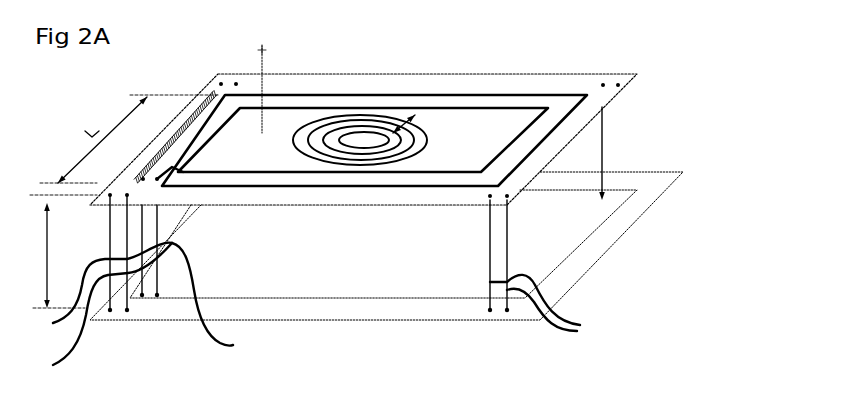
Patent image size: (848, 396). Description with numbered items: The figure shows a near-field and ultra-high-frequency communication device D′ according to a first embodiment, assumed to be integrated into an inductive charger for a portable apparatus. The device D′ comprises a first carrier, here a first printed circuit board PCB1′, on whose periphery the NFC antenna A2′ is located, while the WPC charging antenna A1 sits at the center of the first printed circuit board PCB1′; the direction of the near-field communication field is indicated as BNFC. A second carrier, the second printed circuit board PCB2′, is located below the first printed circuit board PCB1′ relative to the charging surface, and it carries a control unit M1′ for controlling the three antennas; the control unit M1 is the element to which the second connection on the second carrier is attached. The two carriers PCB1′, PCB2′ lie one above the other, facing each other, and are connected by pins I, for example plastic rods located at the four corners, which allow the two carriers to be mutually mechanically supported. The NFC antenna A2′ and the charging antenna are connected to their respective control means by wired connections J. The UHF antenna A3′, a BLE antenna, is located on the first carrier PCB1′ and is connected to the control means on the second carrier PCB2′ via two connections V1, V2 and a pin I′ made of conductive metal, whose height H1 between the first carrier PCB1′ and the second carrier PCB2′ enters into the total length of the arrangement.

The first printed circuit board PCB1′ is at (616, 73).
The second printed circuit board PCB2′ is at (667, 195).
The WPC charging antenna A1 is at (365, 117).
The NFC antenna A2′ is at (463, 98).
The UHF antenna A3′ is at (148, 153).
The NFC field axis BNFC is at (288, 84).
The communication device D′ is at (708, 88).
The connection V1 is at (110, 193).
The connection V2 is at (110, 312).
The height of pin H1 is at (52, 255).
The control unit M1 is at (360, 293).
The control unit M1′ is at (580, 247).
The pins I is at (318, 290).
The pin made of conductive metal I′ is at (105, 293).
The wired connections J is at (209, 303).